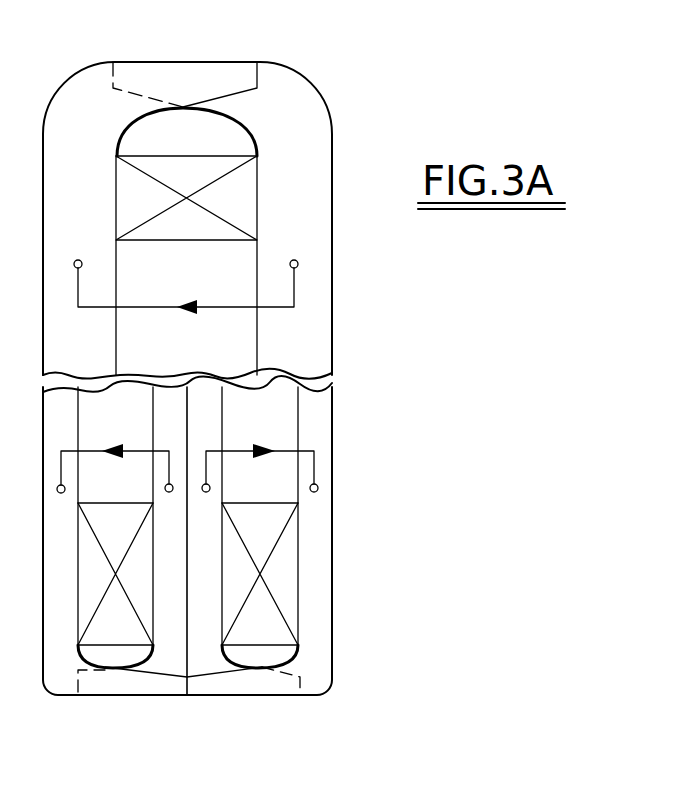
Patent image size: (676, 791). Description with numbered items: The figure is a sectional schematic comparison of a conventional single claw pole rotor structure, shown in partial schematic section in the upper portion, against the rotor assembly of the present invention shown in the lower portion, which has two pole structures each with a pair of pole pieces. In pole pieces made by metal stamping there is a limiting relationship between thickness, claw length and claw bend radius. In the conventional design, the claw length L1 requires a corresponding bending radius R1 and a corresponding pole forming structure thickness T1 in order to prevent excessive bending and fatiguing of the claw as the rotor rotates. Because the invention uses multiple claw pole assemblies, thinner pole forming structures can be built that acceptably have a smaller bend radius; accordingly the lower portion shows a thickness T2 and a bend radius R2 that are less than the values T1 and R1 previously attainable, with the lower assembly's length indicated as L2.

The claw length L1 is at (263, 40).
The bending radius R1 is at (313, 88).
The pole forming structure thickness T1 is at (257, 333).
The thickness T2 is at (298, 543).
The bend radius R2 is at (313, 683).
The length of lower housing bottom L2 is at (320, 735).